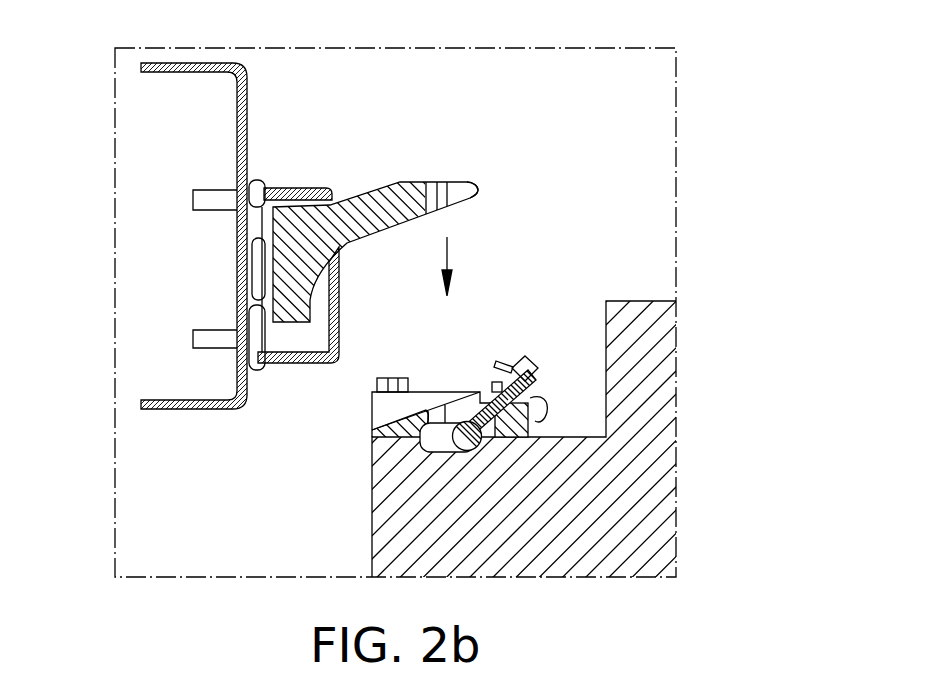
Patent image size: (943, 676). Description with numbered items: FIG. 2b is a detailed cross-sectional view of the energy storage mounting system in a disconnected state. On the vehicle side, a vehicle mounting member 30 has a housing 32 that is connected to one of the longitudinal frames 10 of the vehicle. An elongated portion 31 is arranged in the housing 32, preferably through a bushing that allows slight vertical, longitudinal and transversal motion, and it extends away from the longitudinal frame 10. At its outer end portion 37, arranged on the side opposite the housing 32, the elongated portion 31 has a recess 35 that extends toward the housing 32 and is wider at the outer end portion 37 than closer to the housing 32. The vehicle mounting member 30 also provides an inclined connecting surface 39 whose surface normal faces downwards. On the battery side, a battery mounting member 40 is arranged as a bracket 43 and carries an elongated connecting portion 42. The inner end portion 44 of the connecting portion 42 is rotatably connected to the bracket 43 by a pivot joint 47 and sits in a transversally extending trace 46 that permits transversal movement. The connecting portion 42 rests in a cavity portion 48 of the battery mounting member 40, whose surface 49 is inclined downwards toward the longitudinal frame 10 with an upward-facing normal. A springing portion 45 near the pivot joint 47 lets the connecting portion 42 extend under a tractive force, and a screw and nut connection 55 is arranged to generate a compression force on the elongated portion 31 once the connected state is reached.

The longitudinal frame 10 is at (184, 63).
The housing 32 is at (285, 188).
The vehicle mounting member 30 is at (308, 162).
The elongated portion 31 is at (371, 213).
The recess 35 is at (447, 195).
The outer end portion 37 is at (480, 192).
The connecting surface 39 is at (407, 390).
The surface 49 is at (469, 364).
The cavity portion 48 is at (529, 325).
The battery mounting member 40 is at (532, 372).
The connecting portion 42 is at (537, 378).
The screw and nut connection 55 is at (540, 392).
The bracket 43 is at (390, 405).
The trace 46 is at (432, 443).
The inner end portion 44 is at (437, 452).
The pivot joint 47 is at (470, 451).
The springing portion 45 is at (493, 450).